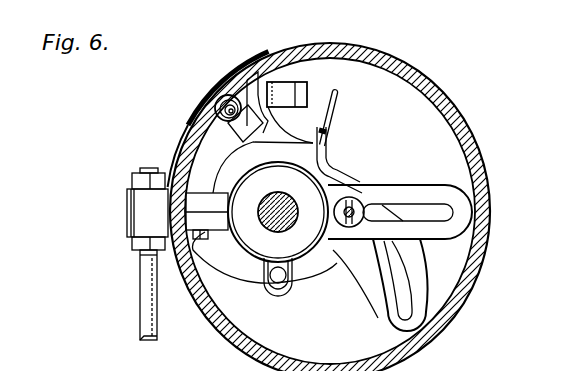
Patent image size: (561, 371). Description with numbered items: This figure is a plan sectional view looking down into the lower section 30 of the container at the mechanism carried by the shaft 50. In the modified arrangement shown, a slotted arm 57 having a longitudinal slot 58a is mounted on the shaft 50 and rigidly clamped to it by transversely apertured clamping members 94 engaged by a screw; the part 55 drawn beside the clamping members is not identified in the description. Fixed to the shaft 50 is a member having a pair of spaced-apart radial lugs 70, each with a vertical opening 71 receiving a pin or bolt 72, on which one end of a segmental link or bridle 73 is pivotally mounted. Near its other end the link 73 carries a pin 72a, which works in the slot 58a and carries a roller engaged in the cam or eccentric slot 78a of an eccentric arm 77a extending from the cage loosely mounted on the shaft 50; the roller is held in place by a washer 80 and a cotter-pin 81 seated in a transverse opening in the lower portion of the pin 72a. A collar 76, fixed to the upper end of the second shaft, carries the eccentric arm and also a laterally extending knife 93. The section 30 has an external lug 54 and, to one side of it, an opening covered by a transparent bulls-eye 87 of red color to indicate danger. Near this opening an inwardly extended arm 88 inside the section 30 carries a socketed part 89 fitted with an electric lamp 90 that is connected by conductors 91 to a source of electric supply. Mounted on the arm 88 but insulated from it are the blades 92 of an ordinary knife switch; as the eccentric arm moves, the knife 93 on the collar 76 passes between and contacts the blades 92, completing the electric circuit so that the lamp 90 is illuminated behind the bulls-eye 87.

The lower section 30 is at (447, 128).
The shaft 50 is at (271, 203).
The external lug 54 is at (133, 199).
The bolt 55 is at (145, 297).
The slotted arm 57 is at (476, 212).
The longitudinal slot 58a is at (420, 212).
The lugs 70 is at (291, 284).
The vertical opening 71 is at (261, 279).
The pin 72 is at (277, 288).
The pin 72a is at (379, 203).
The segmental link 73 is at (337, 271).
The collar 76 is at (328, 171).
The eccentric arm 77a is at (423, 261).
The cam slot 78a is at (401, 296).
The washer 80 is at (353, 200).
The cotter-pin 81 is at (351, 197).
The bulls-eye 87 is at (186, 101).
The arm 88 is at (260, 68).
The socketed part 89 is at (241, 136).
The electric lamp 90 is at (238, 68).
The conductors 91 is at (270, 123).
The blades 92 is at (309, 97).
The knife 93 is at (339, 108).
The clamping members 94 is at (205, 210).